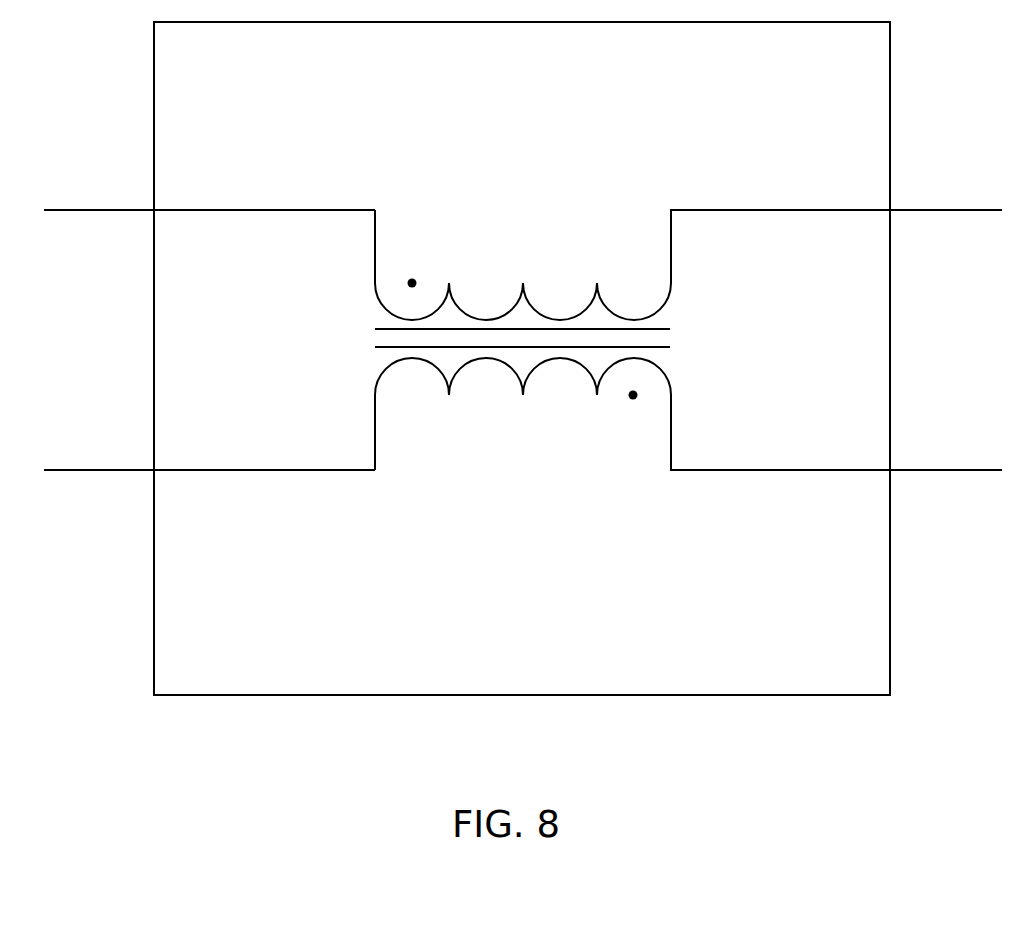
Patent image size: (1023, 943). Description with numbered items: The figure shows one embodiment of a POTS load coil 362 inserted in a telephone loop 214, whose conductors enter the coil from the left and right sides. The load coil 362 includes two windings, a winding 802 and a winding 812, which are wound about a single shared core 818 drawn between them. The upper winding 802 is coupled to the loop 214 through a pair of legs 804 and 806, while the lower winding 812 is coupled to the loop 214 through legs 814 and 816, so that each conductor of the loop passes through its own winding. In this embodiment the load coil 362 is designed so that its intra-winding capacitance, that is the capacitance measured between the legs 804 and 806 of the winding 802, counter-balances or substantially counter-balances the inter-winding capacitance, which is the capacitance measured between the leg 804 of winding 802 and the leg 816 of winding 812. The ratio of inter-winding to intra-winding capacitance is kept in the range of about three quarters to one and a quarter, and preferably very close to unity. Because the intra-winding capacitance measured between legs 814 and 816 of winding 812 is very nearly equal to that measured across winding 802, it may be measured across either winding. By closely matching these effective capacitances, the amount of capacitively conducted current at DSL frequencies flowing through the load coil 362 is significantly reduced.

The load coil 362 is at (890, 591).
The loop 214 is at (80, 210).
The winding 802 is at (668, 302).
The winding 812 is at (376, 381).
The core 818 is at (658, 347).
The leg 804 is at (375, 249).
The leg 806 is at (671, 223).
The leg 814 is at (375, 437).
The leg 816 is at (671, 432).